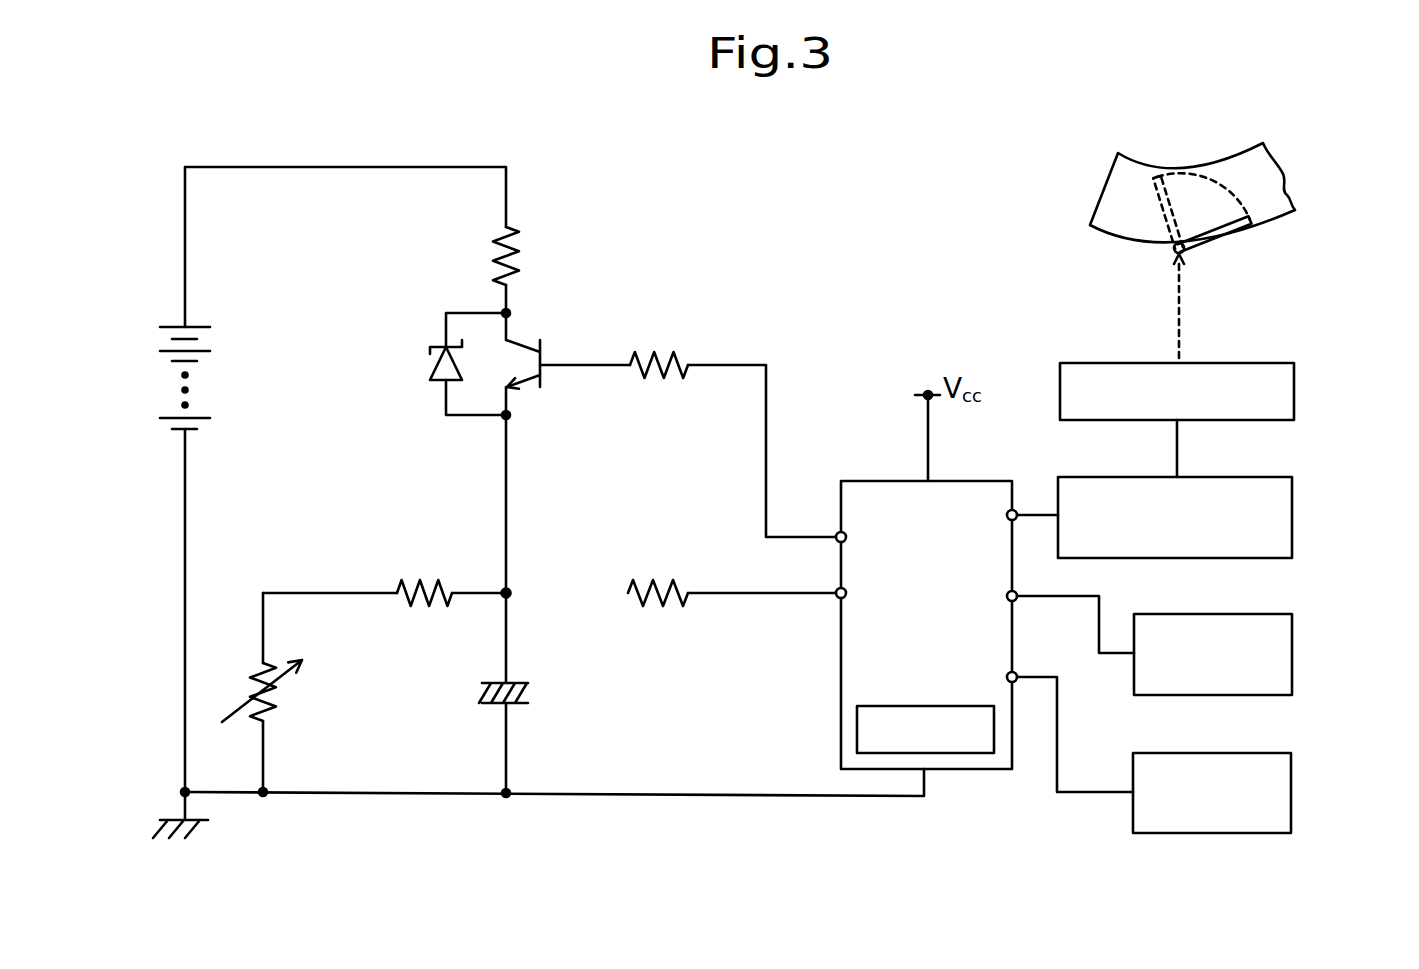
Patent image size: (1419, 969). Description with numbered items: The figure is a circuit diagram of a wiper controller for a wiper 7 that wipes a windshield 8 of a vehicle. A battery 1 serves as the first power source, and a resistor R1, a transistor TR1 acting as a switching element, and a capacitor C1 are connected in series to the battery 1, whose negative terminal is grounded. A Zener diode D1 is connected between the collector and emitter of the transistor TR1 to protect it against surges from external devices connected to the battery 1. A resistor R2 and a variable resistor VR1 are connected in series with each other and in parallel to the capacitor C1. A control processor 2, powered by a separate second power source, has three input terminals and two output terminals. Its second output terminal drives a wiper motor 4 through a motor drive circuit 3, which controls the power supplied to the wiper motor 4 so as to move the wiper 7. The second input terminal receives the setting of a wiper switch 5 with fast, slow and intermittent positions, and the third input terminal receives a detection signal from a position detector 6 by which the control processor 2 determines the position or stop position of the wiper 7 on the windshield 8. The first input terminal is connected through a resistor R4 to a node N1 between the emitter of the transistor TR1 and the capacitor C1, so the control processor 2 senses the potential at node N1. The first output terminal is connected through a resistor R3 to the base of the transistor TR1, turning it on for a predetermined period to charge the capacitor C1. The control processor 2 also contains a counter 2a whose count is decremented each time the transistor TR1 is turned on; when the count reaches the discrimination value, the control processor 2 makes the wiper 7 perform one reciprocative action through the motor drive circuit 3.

The battery 1 is at (208, 351).
The control processor 2 is at (860, 481).
The counter 2a is at (857, 731).
The motor drive circuit 3 is at (1292, 516).
The wiper motor 4 is at (1294, 381).
The wiper switch 5 is at (1292, 650).
The position detector 6 is at (1292, 795).
The wiper 7 is at (1233, 230).
The windshield 8 is at (1112, 181).
The resistor R1 is at (518, 246).
The resistor R2 is at (427, 578).
The resistor R3 is at (657, 347).
The resistor R4 is at (660, 578).
The Zener diode D1 is at (428, 365).
The transistor TR1 is at (547, 373).
The node N1 is at (506, 592).
The capacitor C1 is at (528, 684).
The variable resistor VR1 is at (272, 712).